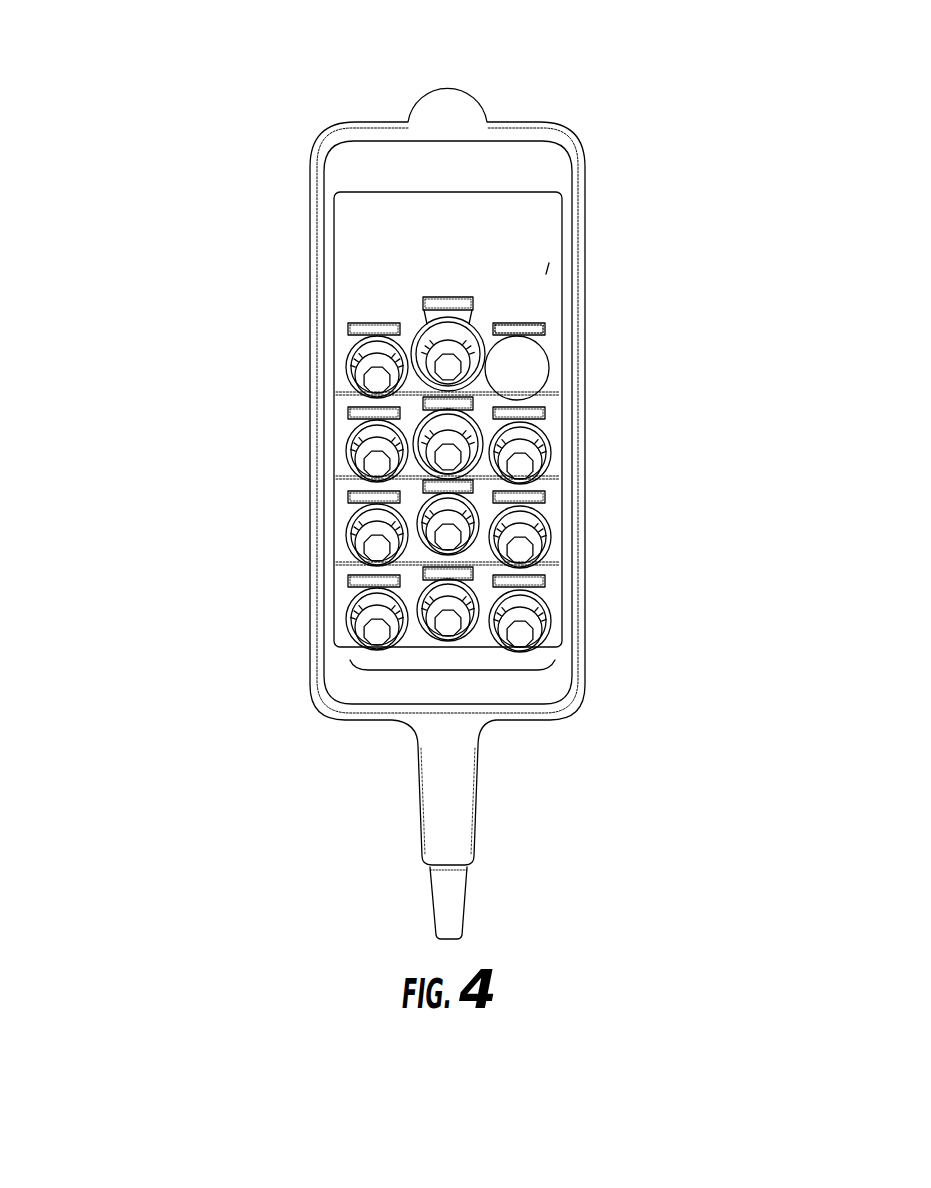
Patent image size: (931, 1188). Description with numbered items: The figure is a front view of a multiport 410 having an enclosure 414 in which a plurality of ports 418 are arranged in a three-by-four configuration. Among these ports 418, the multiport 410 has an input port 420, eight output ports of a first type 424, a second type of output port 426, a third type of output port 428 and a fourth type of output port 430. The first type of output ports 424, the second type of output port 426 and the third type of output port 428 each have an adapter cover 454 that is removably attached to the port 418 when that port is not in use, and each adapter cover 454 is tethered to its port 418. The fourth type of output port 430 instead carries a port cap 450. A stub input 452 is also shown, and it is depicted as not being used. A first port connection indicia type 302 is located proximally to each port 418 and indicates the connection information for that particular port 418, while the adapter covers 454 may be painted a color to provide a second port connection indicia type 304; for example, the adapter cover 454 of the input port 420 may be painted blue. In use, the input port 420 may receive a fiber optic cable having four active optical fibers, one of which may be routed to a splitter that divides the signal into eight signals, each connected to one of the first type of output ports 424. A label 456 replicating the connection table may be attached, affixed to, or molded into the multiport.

The multiport 410 is at (533, 112).
The enclosure 414 is at (308, 163).
The port 418 is at (450, 666).
The input port 420 is at (447, 630).
The first type of output port 424 is at (345, 455).
The second type of output port 426 is at (345, 383).
The third type of output port 428 is at (483, 322).
The fourth type of output port 430 is at (549, 370).
The port cap 450 is at (532, 357).
The stub input 452 is at (478, 797).
The adapter cover 454 is at (348, 328).
The label 456 is at (549, 265).
The first port connection indicia type 302 is at (423, 302).
The second port connection indicia type 304 is at (448, 366).